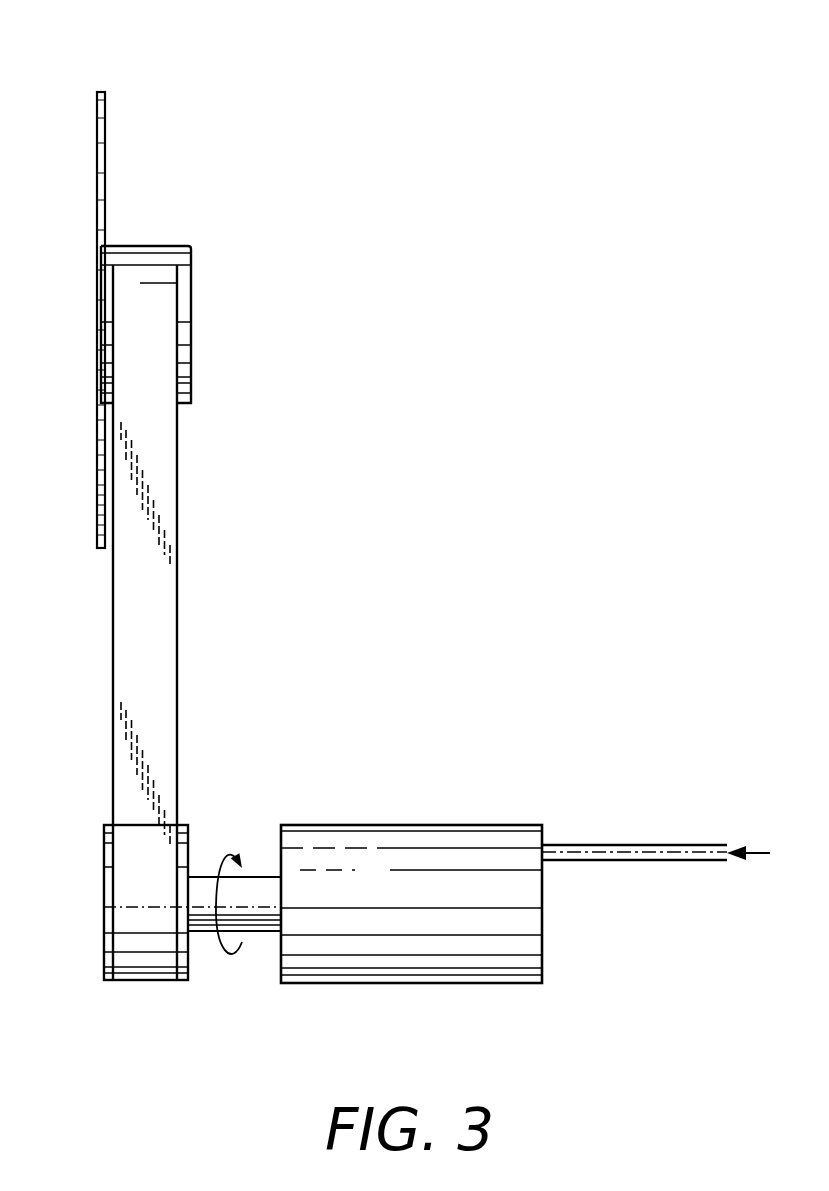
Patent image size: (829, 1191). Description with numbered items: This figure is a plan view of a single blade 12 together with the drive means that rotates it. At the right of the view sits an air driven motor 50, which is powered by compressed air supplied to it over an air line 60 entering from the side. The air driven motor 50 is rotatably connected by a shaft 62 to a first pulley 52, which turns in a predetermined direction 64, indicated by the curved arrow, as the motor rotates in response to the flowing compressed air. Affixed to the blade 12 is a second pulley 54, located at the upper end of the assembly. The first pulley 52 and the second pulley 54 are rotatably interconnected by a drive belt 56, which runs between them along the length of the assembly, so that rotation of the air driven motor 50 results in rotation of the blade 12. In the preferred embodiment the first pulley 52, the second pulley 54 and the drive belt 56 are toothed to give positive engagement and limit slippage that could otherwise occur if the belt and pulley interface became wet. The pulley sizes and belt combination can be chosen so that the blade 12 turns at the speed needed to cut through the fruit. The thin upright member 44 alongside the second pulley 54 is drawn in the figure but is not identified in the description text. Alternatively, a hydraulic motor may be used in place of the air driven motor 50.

The blade 12 is at (97, 160).
The mounting plate 44 is at (100, 90).
The air driven motor 50 is at (422, 825).
The first pulley 52 is at (188, 980).
The second pulley 54 is at (191, 310).
The drive belt 56 is at (165, 598).
The air line 60 is at (640, 845).
The shaft 62 is at (262, 876).
The predetermined direction 64 is at (222, 846).